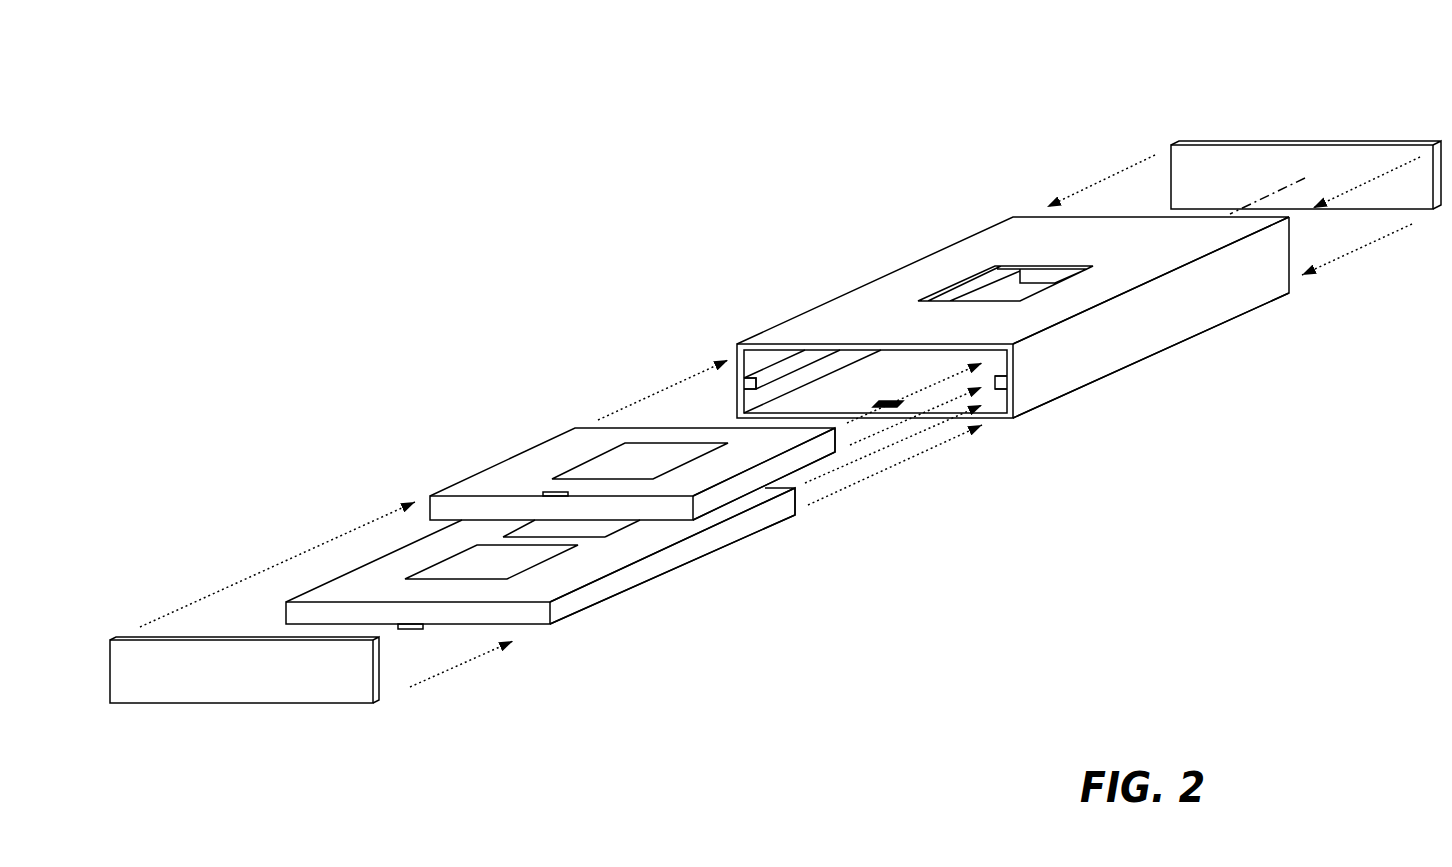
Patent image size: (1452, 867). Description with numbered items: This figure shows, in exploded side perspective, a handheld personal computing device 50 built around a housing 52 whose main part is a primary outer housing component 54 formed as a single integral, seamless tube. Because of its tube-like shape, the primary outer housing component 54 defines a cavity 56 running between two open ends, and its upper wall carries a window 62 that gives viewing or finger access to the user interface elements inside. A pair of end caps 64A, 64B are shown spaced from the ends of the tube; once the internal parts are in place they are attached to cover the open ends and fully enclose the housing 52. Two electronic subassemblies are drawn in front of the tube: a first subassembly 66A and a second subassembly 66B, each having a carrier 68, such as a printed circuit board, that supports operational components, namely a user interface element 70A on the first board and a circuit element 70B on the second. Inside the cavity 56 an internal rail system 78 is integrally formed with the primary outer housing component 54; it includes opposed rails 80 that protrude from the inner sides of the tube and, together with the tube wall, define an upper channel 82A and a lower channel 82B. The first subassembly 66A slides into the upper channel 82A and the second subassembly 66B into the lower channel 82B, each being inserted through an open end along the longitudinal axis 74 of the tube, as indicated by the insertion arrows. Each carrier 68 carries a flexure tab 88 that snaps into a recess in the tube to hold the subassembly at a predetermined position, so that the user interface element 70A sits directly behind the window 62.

The handheld personal computing device 50 is at (1025, 115).
The housing 52 is at (860, 247).
The primary outer housing component 54 is at (1133, 367).
The cavity 56 is at (833, 397).
The window 62 is at (1095, 276).
The end cap 64A is at (343, 704).
The end cap 64B is at (1197, 145).
The first subassembly 66A is at (697, 520).
The second subassembly 66B is at (555, 625).
The carrier 68 is at (760, 477).
The user interface element 70A is at (615, 460).
The circuit element 70B is at (462, 568).
The longitudinal axis 74 is at (1283, 190).
The internal rail system 78 is at (744, 383).
The rail 80 is at (763, 382).
The upper channel 82A is at (997, 360).
The lower channel 82B is at (993, 400).
The flexure tab 88 is at (545, 493).